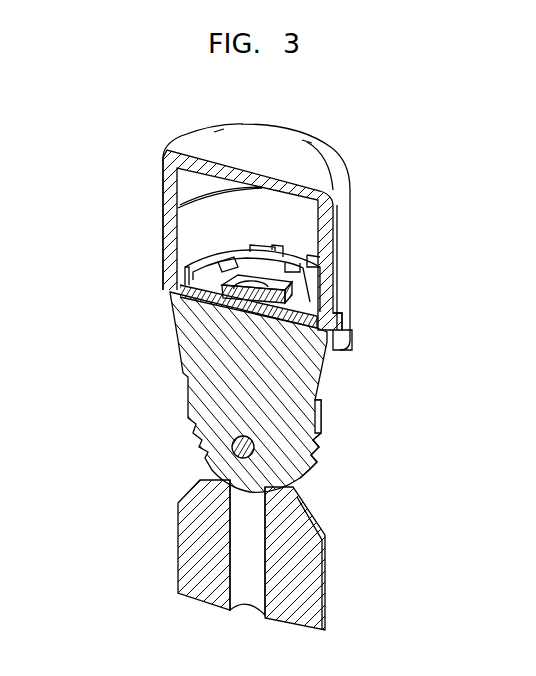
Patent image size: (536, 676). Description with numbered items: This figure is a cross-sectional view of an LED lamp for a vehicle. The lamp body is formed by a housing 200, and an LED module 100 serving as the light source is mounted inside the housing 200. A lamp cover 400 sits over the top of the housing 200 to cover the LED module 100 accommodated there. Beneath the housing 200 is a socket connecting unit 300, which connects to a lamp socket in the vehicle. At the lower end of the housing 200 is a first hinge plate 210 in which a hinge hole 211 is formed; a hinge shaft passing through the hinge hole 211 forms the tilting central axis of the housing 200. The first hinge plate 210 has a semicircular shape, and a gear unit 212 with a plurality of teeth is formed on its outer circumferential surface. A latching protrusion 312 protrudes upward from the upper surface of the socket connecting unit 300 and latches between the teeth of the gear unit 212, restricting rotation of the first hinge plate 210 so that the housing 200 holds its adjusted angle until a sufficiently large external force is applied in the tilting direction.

The lamp cover 400 is at (164, 180).
The LED module 100 is at (202, 272).
The housing 200 is at (249, 393).
The first hinge plate 210 is at (318, 426).
The hinge hole 211 is at (236, 443).
The gear unit 212 is at (292, 481).
The socket connecting unit 300 is at (250, 555).
The latching protrusion 312 is at (255, 490).